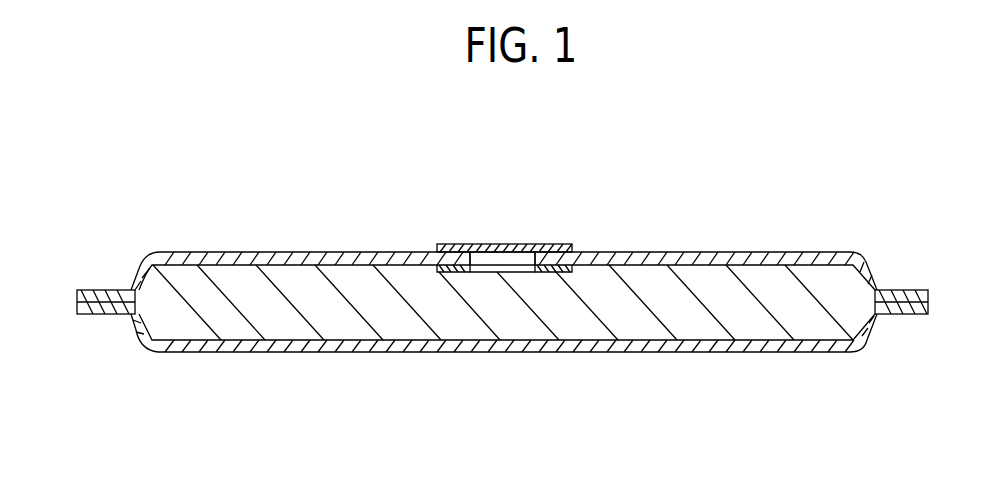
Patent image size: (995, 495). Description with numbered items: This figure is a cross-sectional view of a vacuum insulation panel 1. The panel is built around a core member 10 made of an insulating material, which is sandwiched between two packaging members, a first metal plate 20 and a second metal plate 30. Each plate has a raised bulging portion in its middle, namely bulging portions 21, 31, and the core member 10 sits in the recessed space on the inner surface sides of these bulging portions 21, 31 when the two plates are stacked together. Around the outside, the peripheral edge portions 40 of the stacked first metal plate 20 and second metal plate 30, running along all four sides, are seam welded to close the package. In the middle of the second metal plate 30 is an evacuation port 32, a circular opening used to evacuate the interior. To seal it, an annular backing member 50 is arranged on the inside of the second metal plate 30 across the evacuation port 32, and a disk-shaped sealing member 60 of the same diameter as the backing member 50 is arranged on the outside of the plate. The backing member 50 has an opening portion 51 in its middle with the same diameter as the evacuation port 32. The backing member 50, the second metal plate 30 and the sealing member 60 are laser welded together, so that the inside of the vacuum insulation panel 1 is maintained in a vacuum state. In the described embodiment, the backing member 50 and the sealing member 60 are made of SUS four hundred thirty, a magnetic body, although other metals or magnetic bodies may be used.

The vacuum insulation panel 1 is at (799, 106).
The core member 10 is at (226, 313).
The first metal plate 20 is at (328, 352).
The bulging portion 21 is at (763, 352).
The second metal plate 30 is at (289, 252).
The bulging portion 31 is at (775, 252).
The evacuation port 32 is at (523, 252).
The peripheral edge portions 40 is at (98, 314).
The backing member 50 is at (552, 273).
The opening portion 51 is at (488, 273).
The sealing member 60 is at (490, 244).